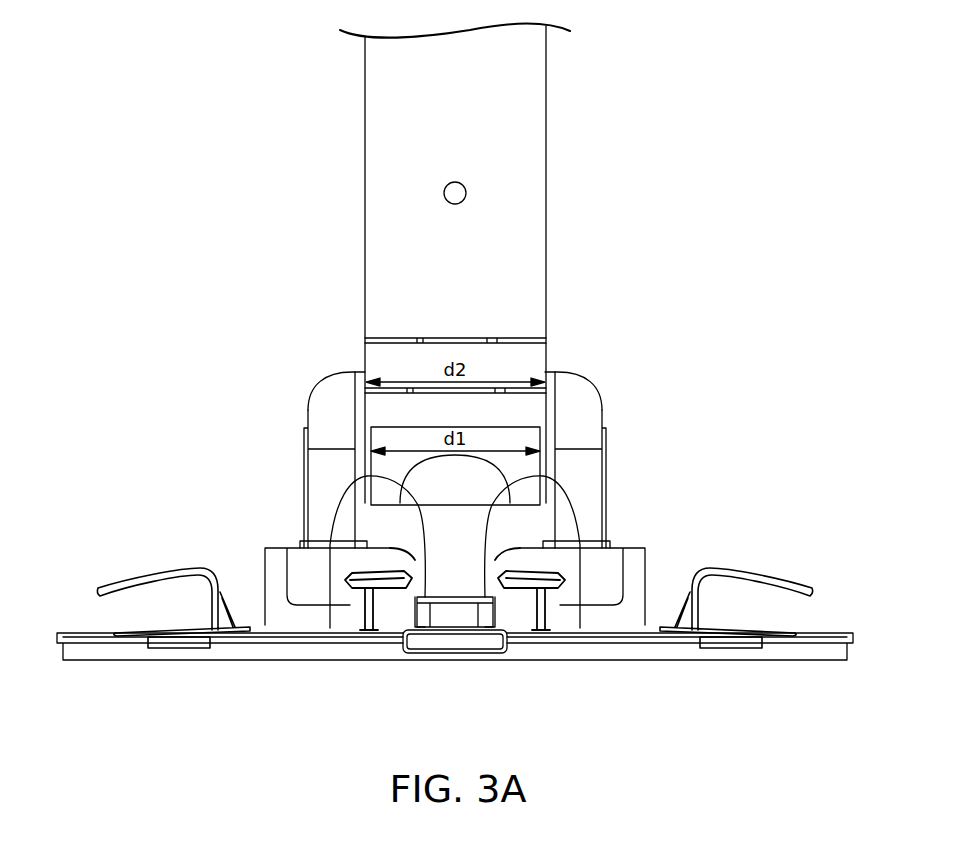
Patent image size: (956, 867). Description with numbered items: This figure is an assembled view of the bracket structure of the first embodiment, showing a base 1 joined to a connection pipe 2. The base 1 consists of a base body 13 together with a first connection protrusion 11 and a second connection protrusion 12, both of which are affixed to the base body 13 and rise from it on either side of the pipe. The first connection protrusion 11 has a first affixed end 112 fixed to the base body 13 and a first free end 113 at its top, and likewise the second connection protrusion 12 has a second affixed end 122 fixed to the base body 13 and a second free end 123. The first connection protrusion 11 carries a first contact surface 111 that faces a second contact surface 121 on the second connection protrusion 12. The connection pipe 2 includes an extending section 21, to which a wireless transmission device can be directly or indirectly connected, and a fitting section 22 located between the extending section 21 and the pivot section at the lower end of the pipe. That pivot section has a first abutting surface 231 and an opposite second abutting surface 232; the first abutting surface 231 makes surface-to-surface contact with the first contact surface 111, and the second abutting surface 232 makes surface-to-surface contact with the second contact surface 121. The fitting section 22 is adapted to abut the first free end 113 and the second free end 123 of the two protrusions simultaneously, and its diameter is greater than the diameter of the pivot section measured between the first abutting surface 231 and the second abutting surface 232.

The base 1 is at (116, 672).
The connection pipe 2 is at (350, 101).
The first connection protrusion 11 is at (318, 418).
The second connection protrusion 12 is at (590, 418).
The base body 13 is at (117, 630).
The extending section 21 is at (538, 120).
The fitting section 22 is at (498, 378).
The first contact surface 111 is at (412, 570).
The first affixed end 112 is at (310, 543).
The first free end 113 is at (322, 383).
The second contact surface 121 is at (498, 577).
The second affixed end 122 is at (598, 543).
The second free end 123 is at (590, 383).
The first abutting surface 231 is at (340, 548).
The second abutting surface 232 is at (573, 548).